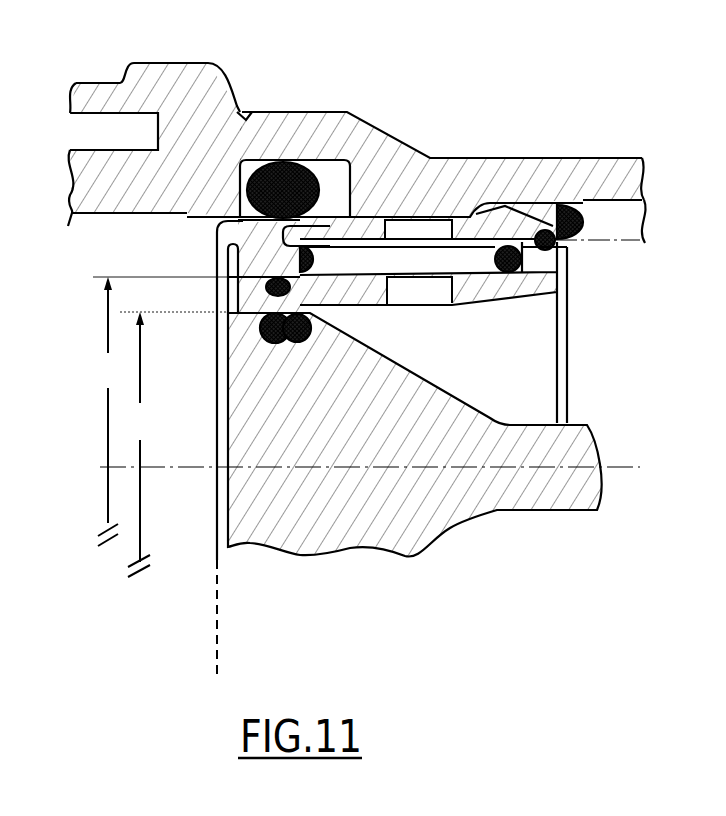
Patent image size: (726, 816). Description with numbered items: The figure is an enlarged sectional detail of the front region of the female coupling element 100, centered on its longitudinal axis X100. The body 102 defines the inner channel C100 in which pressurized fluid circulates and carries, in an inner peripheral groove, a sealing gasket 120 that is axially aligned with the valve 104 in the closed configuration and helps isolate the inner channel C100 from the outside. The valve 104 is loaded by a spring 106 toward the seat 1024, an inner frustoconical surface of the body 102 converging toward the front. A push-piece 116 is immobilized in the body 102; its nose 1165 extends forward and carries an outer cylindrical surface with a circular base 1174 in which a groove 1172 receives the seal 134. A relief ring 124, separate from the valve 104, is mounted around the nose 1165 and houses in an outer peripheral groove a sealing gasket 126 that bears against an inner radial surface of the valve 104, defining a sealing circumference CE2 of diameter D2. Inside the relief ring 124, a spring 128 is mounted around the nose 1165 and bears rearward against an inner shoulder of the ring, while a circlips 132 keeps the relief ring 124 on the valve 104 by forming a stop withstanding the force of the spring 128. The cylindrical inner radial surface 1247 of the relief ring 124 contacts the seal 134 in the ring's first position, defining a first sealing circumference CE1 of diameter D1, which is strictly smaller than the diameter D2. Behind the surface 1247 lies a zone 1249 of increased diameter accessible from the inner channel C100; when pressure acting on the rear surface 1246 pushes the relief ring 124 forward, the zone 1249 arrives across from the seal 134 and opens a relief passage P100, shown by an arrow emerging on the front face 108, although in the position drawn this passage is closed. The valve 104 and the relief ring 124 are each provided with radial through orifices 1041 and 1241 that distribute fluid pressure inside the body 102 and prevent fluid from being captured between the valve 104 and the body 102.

The female coupling element 100 is at (430, 603).
The body 102 is at (510, 172).
The valve 104 is at (355, 233).
The radial through orifices 1041 is at (438, 214).
The seat 1024 is at (550, 228).
The spring 106 is at (603, 217).
The front face 108 is at (216, 462).
The push-piece 116 is at (579, 497).
The nose 1165 is at (267, 502).
The groove 1172 is at (238, 286).
The outer cylindrical surface with a circular base 1174 is at (222, 247).
The sealing gasket 120 is at (290, 178).
The relief ring 124 is at (542, 290).
The radial through orifices 1241 is at (444, 304).
The rear surface 1246 is at (567, 300).
The inner radial surface 1247 is at (288, 345).
The zone 1249 is at (317, 313).
The sealing gasket 126 is at (262, 286).
The spring 128 is at (520, 262).
The circlips 132 is at (555, 242).
The seal 134 is at (310, 320).
The relief passage P100 is at (322, 314).
The inner channel C100 is at (633, 405).
The longitudinal axis X100 is at (640, 465).
The first sealing circumference CE1 is at (137, 316).
The sealing circumference CE2 is at (137, 270).
The diameter D1 is at (140, 444).
The diameter D2 is at (108, 411).